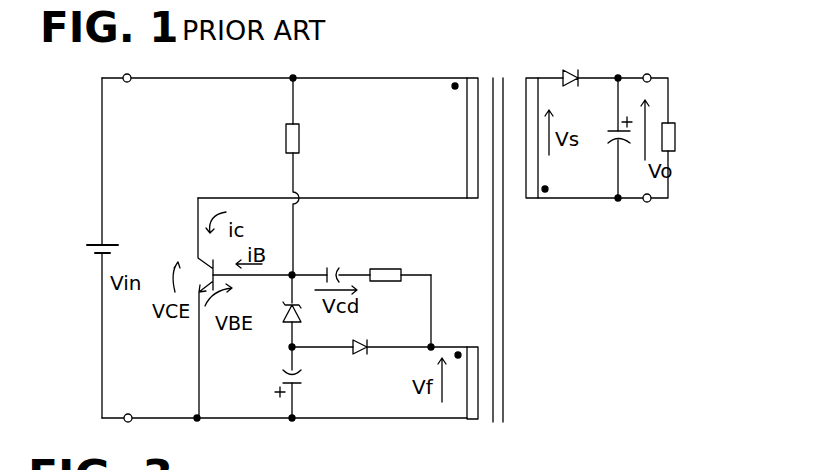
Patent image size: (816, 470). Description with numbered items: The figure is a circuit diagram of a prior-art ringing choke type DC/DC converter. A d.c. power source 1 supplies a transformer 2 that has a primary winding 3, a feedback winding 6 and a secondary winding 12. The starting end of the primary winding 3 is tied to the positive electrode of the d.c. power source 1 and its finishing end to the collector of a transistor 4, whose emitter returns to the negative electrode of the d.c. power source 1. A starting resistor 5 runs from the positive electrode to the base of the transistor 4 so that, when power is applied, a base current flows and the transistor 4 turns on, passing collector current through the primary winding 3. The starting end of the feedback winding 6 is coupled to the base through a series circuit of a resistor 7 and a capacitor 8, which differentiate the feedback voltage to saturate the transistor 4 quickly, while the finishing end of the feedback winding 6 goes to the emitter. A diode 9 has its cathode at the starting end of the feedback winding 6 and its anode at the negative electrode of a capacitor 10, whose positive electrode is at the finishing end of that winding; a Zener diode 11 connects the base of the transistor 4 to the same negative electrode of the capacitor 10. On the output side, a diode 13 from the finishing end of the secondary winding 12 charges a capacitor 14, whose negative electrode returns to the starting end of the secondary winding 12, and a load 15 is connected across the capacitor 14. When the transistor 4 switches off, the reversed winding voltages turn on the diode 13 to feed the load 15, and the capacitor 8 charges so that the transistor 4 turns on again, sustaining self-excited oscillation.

The d.c. power source 1 is at (113, 243).
The transformer 2 is at (503, 78).
The primary winding 3 is at (477, 78).
The transistor 4 is at (199, 268).
The starting resistor 5 is at (299, 133).
The feedback winding 6 is at (473, 420).
The resistor 7 is at (392, 268).
The capacitor 8 is at (333, 268).
The diode 9 is at (365, 352).
The capacitor 10 is at (303, 378).
The Zener diode 11 is at (283, 318).
The secondary winding 12 is at (533, 200).
The diode 13 is at (576, 70).
The capacitor 14 is at (610, 134).
The load 15 is at (676, 137).